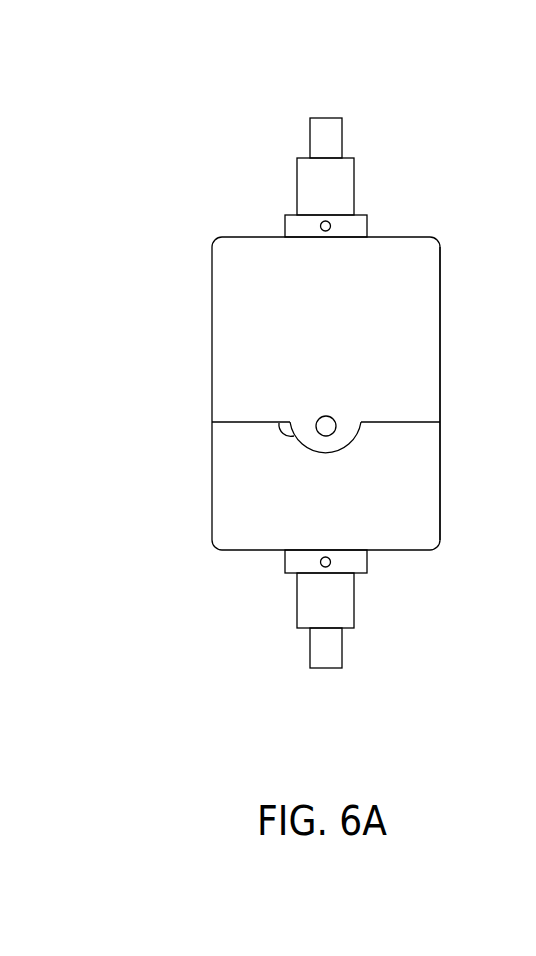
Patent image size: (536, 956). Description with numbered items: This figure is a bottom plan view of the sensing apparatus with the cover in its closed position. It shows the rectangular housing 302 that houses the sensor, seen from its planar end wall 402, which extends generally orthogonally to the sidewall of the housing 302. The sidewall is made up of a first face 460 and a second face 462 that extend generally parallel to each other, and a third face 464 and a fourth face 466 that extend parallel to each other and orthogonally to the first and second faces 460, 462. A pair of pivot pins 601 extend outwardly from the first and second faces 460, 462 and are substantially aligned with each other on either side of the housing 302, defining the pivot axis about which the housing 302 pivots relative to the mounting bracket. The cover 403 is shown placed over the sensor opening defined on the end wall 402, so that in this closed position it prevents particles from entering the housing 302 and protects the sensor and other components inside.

The housing 302 is at (183, 105).
The pivot pins 601 is at (301, 130).
The second face 462 is at (410, 237).
The cover 403 is at (225, 293).
The fourth face 466 is at (212, 448).
The end wall 402 is at (235, 497).
The third face 464 is at (440, 477).
The first face 460 is at (404, 550).